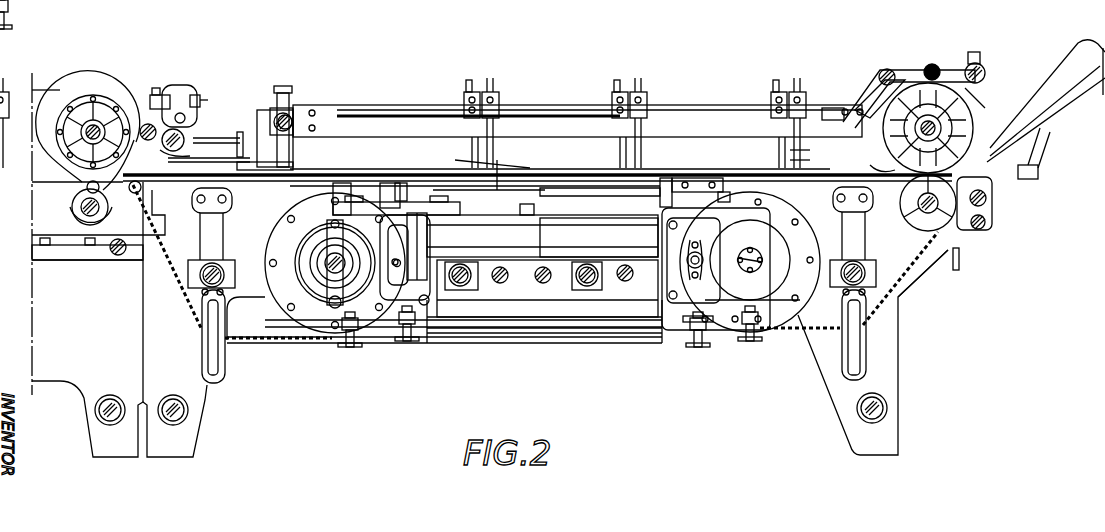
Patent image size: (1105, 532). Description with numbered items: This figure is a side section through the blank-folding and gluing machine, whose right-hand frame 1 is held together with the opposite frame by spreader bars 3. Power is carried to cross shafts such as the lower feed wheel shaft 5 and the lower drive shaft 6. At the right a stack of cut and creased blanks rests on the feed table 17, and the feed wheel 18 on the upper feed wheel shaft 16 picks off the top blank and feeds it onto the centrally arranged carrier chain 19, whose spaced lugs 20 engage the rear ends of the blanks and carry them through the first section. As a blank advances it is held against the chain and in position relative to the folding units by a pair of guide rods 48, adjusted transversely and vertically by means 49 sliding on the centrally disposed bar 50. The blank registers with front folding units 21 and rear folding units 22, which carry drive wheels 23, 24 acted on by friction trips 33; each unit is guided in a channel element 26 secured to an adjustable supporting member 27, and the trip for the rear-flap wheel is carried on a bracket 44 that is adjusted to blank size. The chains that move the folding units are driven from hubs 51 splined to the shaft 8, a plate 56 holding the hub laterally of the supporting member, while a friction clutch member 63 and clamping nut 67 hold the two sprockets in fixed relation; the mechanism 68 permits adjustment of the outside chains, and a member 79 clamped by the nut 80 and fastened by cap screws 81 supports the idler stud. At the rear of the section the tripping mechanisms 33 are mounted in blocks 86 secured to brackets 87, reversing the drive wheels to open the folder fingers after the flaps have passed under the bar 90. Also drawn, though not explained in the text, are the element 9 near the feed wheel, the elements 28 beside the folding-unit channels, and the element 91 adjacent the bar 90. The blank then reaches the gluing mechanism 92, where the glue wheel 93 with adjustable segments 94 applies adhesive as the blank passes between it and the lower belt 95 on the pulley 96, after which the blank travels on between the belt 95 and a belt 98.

The right-hand frame 1 is at (883, 338).
The spreader bars 3 is at (108, 398).
The lower feed wheel shaft 5 is at (962, 235).
The lower drive shaft 6 is at (112, 253).
The shaft 8 is at (328, 260).
The pulley 9 is at (915, 224).
The upper feed wheel shaft 16 is at (945, 108).
The feed table 17 is at (1046, 109).
The feed wheel 18 is at (908, 145).
The carrier chain 19 is at (895, 298).
The lugs 20 is at (945, 283).
The front folding units 21 is at (342, 183).
The rear folding units 22 is at (392, 183).
The drive wheel 23 is at (668, 200).
The drive wheel 24 is at (685, 335).
The channel element 26 is at (618, 188).
The supporting members 27 is at (624, 252).
The bolt 28 is at (462, 286).
The friction trip 33 is at (454, 200).
The bracket 44 is at (548, 236).
The guide rods 48 is at (798, 158).
The adjusting means 49 is at (475, 98).
The bar 50 is at (690, 118).
The hubs 51 is at (325, 264).
The plate 56 is at (315, 334).
The member 63 is at (290, 305).
The clamping nut 67 is at (330, 222).
The mechanism 68 is at (708, 260).
The member 79 is at (752, 252).
The nut 80 is at (767, 254).
The cap screws 81 is at (745, 266).
The members 86 is at (396, 249).
The bracket 87 is at (428, 238).
The bar 90 is at (408, 180).
The rod 91 is at (508, 164).
The gluing mechanism 92 is at (215, 153).
The glue wheel 93 is at (82, 113).
The adjustable segments 94 is at (110, 97).
The lower belt 95 is at (55, 240).
The pulley 96 is at (85, 207).
The belt 98 is at (38, 95).